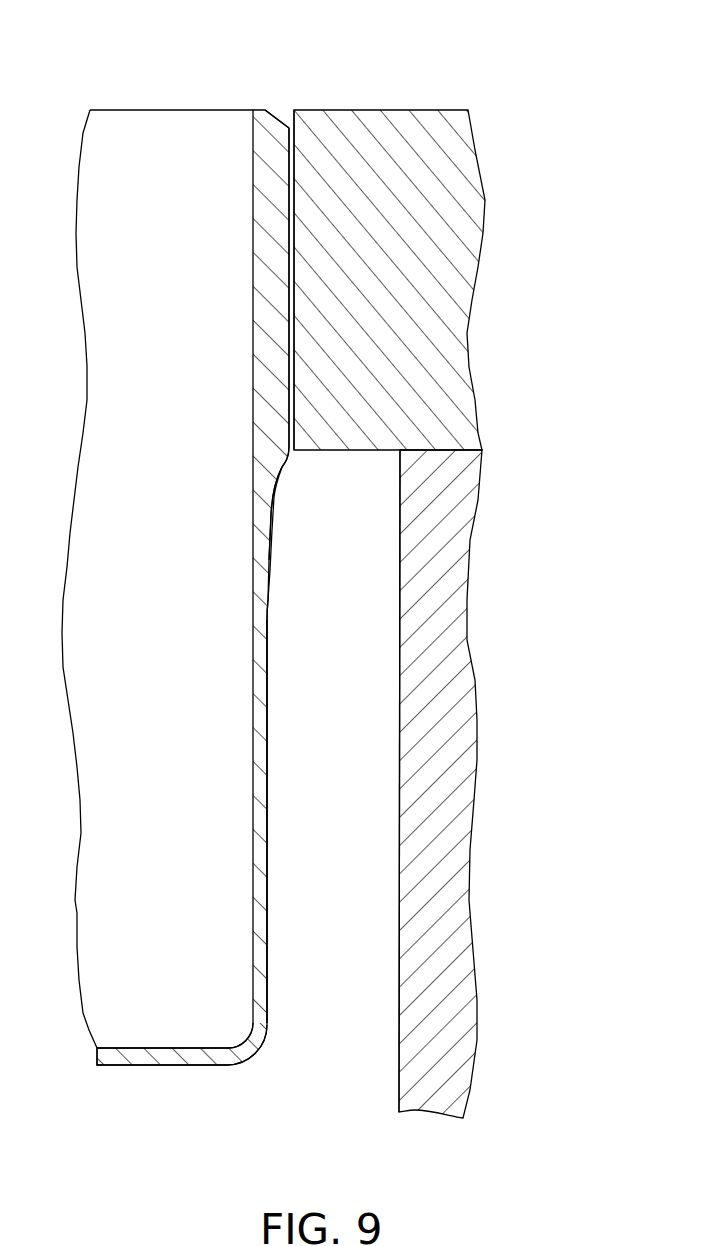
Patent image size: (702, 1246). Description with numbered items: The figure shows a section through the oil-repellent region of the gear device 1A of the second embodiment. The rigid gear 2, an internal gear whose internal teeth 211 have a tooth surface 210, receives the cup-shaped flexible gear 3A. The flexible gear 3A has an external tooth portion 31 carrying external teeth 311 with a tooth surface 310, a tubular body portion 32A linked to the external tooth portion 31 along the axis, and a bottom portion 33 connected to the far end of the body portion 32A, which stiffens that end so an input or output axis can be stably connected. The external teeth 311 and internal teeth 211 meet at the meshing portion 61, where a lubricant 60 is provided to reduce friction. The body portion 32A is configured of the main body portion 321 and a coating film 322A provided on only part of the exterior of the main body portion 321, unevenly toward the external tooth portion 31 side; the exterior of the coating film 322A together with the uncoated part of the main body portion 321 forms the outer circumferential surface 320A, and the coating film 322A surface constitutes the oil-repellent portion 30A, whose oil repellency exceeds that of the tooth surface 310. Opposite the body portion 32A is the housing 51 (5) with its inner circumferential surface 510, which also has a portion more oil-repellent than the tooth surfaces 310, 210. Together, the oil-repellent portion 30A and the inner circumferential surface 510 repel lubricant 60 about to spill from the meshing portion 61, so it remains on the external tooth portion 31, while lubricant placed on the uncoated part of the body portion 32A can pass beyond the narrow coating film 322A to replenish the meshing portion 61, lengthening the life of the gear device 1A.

The gear device 1A is at (520, 78).
The rigid gear 2 is at (450, 110).
The flexible gear 3A is at (100, 110).
The external tooth portion 31 is at (268, 110).
The internal teeth 211 is at (283, 120).
The tooth surface 310 is at (286, 168).
The tooth surface 210 is at (294, 210).
The meshing portion 61 is at (294, 323).
The lubricant 60 is at (294, 355).
The external teeth 311 is at (291, 415).
The oil-repellent portion 30A is at (273, 536).
The coating film 322A is at (272, 587).
The body portion 32A is at (343, 605).
The main body portion 321 is at (270, 630).
The outer circumferential surface 320A is at (270, 724).
The bottom portion 33 is at (158, 1070).
The housing 51 is at (440, 691).
The element 5 is at (484, 784).
The inner circumferential surface 510 is at (408, 762).